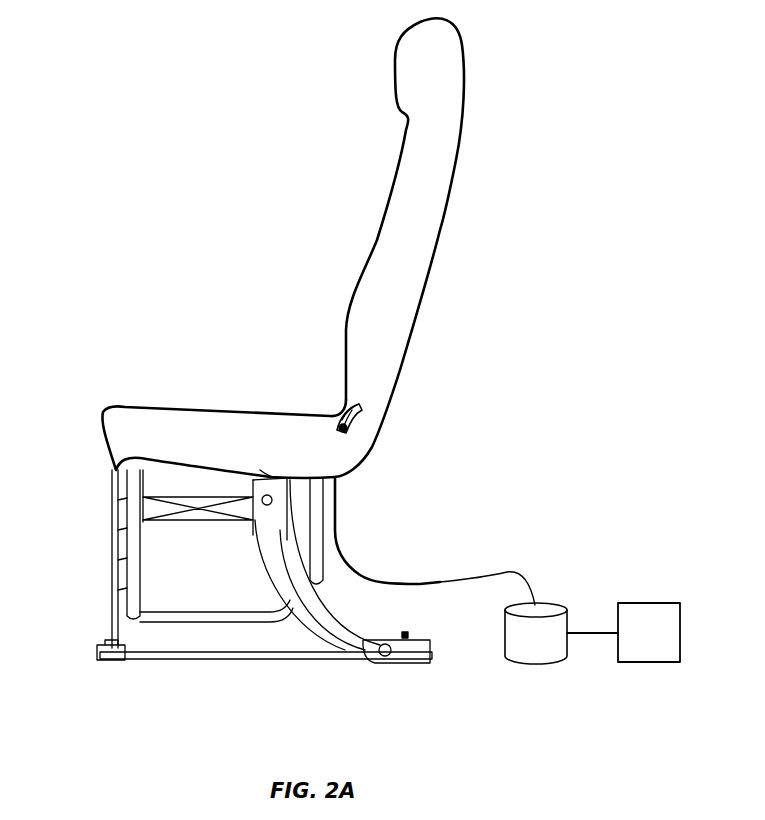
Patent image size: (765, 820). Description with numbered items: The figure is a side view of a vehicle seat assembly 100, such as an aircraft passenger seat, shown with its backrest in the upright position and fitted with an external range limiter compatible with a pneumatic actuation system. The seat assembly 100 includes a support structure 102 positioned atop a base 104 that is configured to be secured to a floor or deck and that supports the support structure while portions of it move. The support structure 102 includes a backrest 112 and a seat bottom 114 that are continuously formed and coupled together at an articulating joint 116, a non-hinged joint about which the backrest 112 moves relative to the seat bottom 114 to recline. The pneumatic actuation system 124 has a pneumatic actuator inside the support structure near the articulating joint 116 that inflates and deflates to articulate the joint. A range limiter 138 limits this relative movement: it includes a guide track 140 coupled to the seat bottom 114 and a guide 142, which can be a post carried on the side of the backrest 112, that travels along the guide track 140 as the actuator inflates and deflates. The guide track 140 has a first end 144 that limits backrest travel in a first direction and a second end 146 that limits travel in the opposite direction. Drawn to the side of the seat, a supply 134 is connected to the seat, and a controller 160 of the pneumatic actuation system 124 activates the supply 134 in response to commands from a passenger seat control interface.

The vehicle seat assembly 100 is at (178, 204).
The support structure 102 is at (346, 298).
The base 104 is at (100, 561).
The backrest 112 is at (380, 227).
The seat bottom 114 is at (183, 406).
The articulating joint 116 is at (335, 410).
The pneumatic actuation system 124 is at (588, 580).
The supply 134 is at (536, 633).
The range limiter 138 is at (367, 433).
The guide track 140 is at (364, 421).
The guide 142 is at (350, 431).
The first end 144 is at (342, 432).
The second end 146 is at (362, 410).
The controller 160 is at (649, 632).